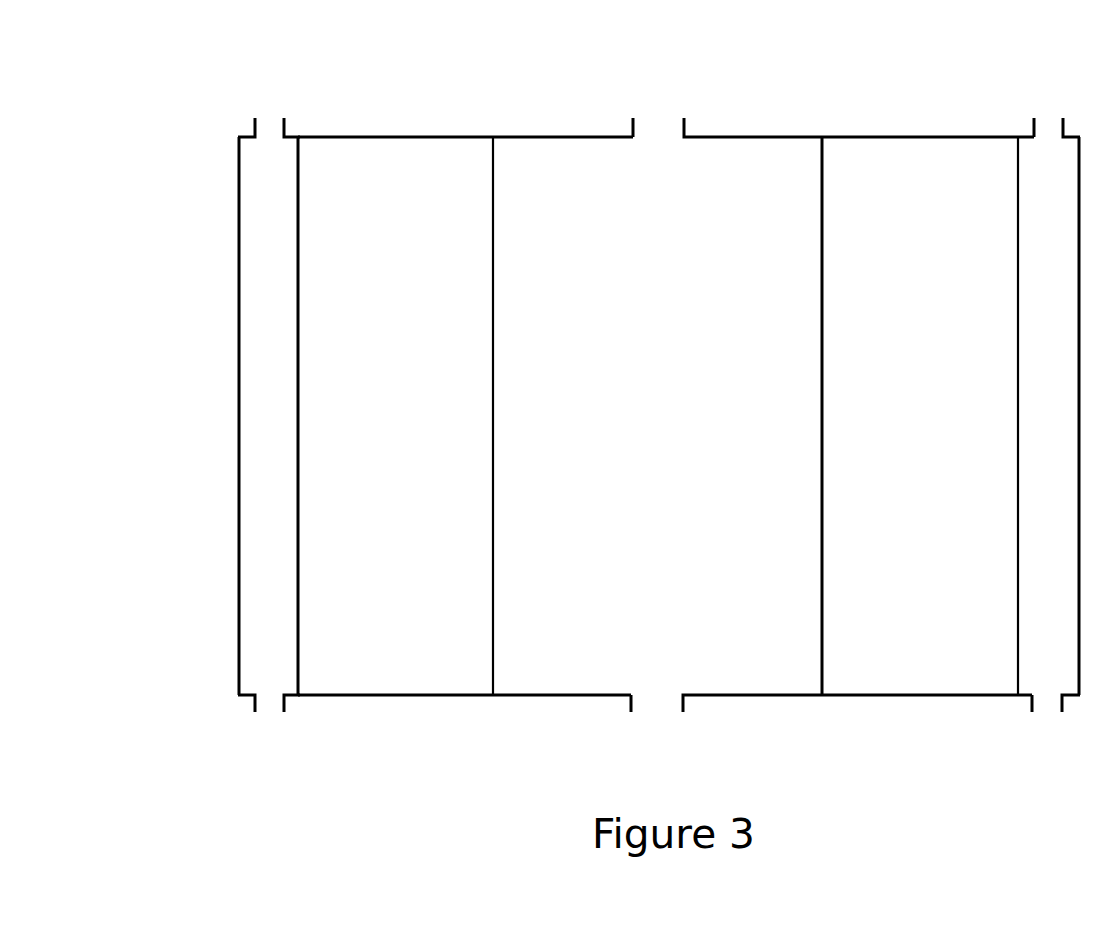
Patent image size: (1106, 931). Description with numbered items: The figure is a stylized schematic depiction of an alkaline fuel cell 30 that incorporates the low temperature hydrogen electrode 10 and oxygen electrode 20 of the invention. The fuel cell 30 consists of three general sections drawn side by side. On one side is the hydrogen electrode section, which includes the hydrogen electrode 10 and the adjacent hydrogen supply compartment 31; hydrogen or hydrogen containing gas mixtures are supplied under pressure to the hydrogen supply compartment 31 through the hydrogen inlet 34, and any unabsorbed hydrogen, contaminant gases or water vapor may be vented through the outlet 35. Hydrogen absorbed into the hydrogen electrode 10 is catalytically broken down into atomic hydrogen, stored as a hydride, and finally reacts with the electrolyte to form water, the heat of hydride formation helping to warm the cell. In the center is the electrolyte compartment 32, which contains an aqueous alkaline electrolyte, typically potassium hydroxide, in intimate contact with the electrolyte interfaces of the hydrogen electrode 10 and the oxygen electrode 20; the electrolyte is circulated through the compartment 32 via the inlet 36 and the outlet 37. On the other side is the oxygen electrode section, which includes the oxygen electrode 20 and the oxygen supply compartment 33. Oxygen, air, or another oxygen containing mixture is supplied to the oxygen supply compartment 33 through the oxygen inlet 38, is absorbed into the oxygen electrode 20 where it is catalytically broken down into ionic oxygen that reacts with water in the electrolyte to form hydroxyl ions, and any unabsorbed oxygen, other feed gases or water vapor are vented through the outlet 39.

The alkaline fuel cell 30 is at (173, 232).
The hydrogen electrode 10 is at (465, 416).
The oxygen electrode 20 is at (867, 416).
The hydrogen supply compartment 31 is at (262, 416).
The electrolyte compartment 32 is at (657, 416).
The oxygen supply compartment 33 is at (1055, 416).
The hydrogen inlet 34 is at (267, 118).
The outlet 35 is at (266, 712).
The inlet 36 is at (658, 122).
The outlet 37 is at (658, 710).
The oxygen inlet 38 is at (1047, 118).
The outlet 39 is at (1050, 712).